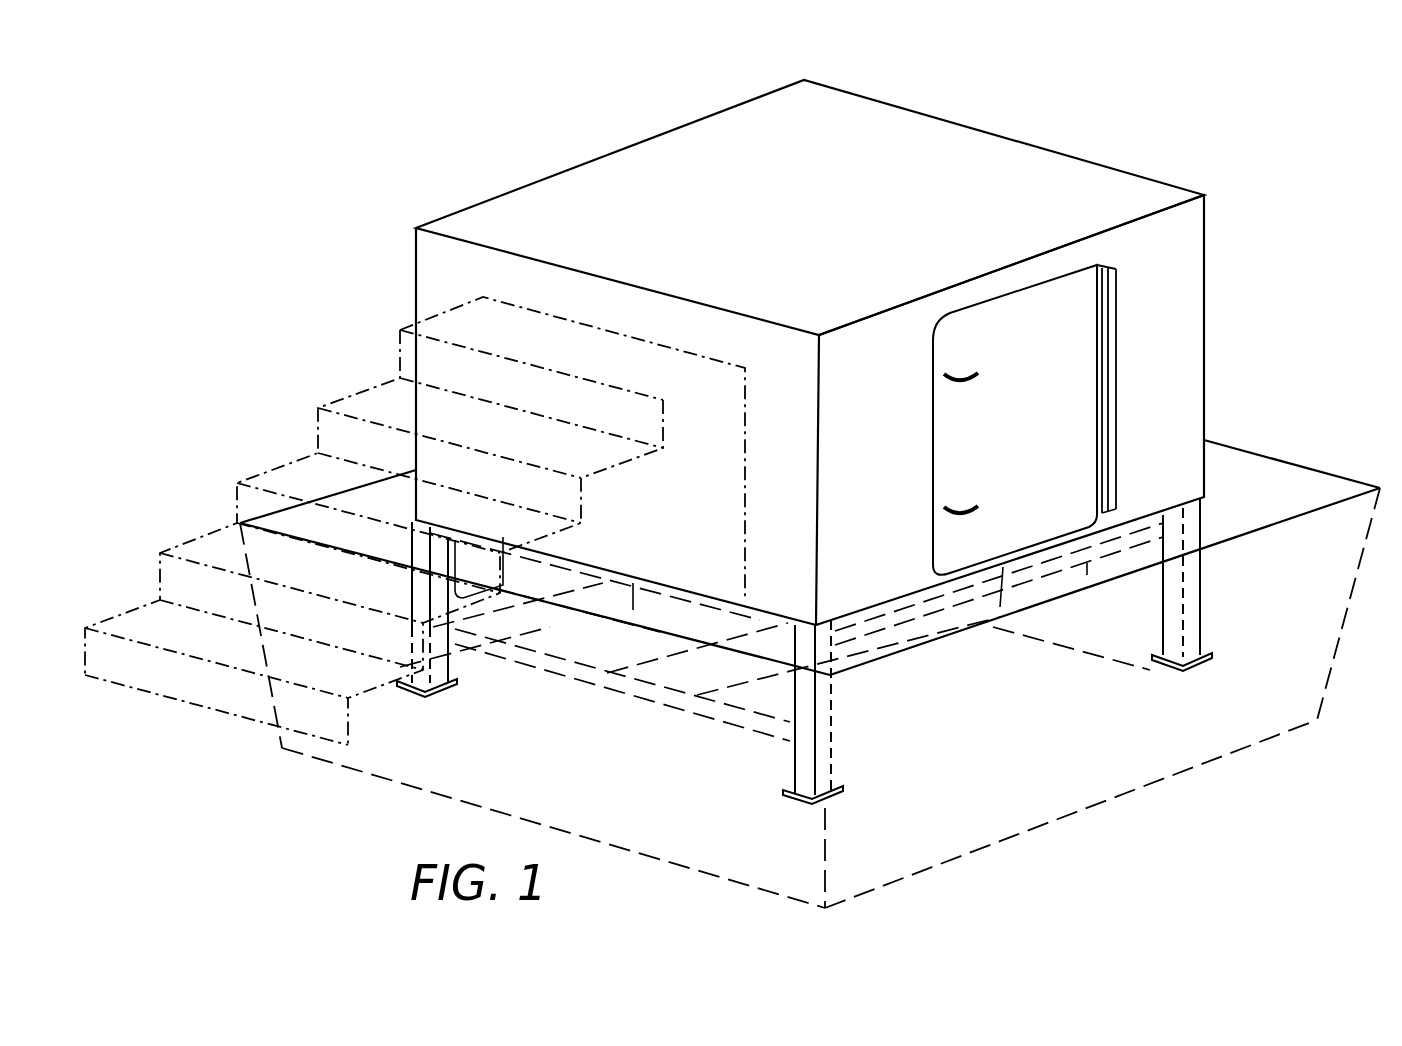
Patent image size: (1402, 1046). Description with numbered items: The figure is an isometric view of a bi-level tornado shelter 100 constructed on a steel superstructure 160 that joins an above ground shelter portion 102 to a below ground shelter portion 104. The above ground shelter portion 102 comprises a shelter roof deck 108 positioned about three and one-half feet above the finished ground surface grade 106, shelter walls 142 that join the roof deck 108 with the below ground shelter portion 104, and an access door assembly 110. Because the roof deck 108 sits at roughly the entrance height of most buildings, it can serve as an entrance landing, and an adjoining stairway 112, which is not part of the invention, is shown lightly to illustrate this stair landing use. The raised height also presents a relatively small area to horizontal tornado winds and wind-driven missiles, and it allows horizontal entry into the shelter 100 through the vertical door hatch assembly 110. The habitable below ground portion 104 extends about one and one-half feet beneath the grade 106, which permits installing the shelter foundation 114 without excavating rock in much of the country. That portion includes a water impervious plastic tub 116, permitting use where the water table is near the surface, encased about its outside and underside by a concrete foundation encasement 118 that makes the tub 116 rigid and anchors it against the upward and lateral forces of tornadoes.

The bi-level tornado shelter 100 is at (1166, 108).
The above ground shelter portion 102 is at (1204, 327).
The shelter roof deck 108 is at (862, 108).
The shelter walls 142 is at (1192, 262).
The access door assembly 110 is at (1065, 422).
The adjoining stairway 112 is at (383, 395).
The below ground shelter portion 104 is at (1165, 747).
The shelter foundation 114 is at (1020, 810).
The concrete foundation encasement 118 is at (1223, 458).
The finished ground surface grade 106 is at (1245, 533).
The water impervious plastic tub 116 is at (1153, 535).
The steel superstructure 160 is at (833, 740).